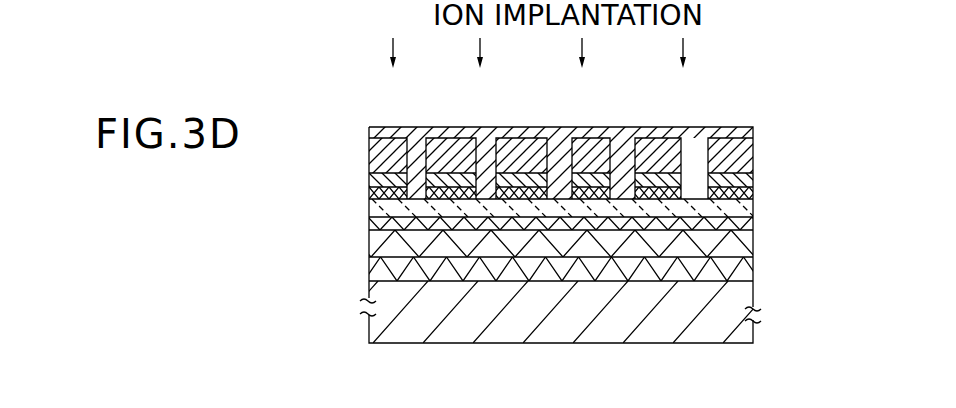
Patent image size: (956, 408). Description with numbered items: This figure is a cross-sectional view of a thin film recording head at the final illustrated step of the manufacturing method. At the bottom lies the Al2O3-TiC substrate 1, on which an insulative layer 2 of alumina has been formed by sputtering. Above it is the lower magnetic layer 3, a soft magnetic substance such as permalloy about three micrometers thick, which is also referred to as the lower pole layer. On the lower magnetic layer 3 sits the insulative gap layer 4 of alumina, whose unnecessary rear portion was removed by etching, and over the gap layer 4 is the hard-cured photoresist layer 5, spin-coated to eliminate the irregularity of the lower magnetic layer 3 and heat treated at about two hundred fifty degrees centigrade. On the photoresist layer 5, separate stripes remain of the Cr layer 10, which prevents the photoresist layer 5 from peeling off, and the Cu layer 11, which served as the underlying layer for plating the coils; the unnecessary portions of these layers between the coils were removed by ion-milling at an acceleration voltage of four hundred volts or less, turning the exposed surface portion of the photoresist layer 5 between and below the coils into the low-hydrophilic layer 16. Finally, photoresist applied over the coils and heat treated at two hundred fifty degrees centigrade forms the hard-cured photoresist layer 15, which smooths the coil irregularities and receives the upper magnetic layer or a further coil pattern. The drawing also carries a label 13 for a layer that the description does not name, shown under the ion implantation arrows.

The substrate 1 is at (755, 292).
The insulative layer 2 is at (372, 266).
The lower magnetic layer 3 is at (755, 245).
The insulative gap layer 4 is at (372, 220).
The hard-cured photoresist layer 5 is at (755, 210).
The Cr layer 10 is at (755, 196).
The Cu layer 11 is at (754, 181).
The covering layer 13 is at (389, 135).
The hard-cured photoresist layer 15 is at (404, 153).
The low-hydrophilic layer 16 is at (398, 203).